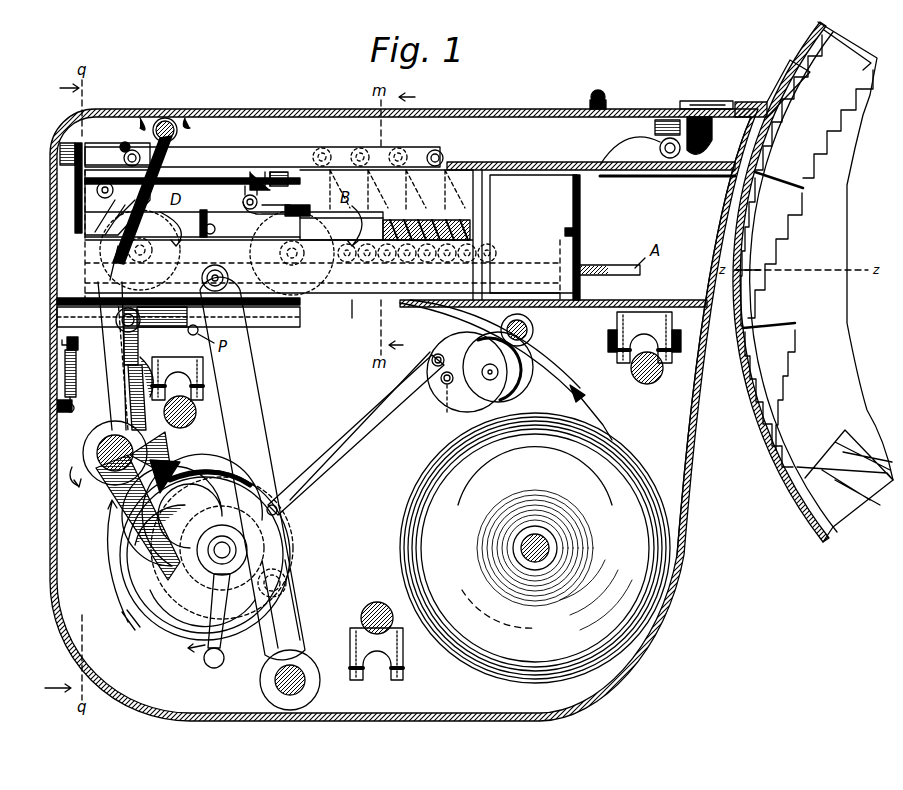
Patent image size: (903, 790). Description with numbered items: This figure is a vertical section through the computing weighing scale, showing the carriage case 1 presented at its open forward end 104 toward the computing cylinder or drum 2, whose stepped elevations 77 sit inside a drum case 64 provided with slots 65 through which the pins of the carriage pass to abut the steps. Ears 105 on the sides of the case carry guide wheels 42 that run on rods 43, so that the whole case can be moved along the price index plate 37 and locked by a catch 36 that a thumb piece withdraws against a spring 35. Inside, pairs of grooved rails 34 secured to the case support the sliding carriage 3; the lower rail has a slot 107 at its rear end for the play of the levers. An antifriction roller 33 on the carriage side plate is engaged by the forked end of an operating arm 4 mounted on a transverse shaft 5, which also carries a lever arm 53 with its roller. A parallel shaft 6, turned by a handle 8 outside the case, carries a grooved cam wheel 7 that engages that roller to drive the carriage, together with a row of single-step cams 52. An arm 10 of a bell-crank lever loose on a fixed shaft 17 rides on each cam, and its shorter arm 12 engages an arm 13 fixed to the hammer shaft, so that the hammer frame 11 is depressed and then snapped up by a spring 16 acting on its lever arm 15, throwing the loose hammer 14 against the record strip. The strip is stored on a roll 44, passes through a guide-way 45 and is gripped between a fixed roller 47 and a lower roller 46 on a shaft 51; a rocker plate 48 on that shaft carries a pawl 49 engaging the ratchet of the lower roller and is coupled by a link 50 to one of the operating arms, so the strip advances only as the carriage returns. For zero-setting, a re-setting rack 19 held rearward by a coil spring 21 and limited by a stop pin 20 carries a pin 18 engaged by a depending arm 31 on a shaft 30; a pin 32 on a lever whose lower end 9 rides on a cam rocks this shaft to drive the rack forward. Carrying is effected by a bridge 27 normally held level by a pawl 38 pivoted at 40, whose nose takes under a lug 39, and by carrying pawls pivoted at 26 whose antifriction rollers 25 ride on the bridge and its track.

The carriage case 1 is at (270, 109).
The computing cylinder or drum 2 is at (813, 282).
The carriage 3 is at (370, 318).
The operating arm 4 is at (262, 410).
The transverse shaft 5 is at (275, 682).
The shaft 6 is at (222, 550).
The grooved cam wheel 7 is at (120, 541).
The operating handle 8 is at (204, 621).
The lower end of lever arm 9 is at (128, 506).
The bell-crank lever arm 10 is at (155, 425).
The hammer frame 11 is at (162, 326).
The shorter bell-crank arm 12 is at (168, 415).
The arm 13 is at (140, 337).
The hammer 14 is at (57, 298).
The lever arm 15 is at (116, 321).
The spring 16 is at (65, 382).
The fixed shaft 17 is at (96, 456).
The pin 18 is at (85, 226).
The re-setting rack 19 is at (210, 212).
The stop pin 20 is at (216, 229).
The coil spring 21 is at (442, 220).
The antifriction roller 25 is at (443, 156).
The pivot 26 is at (132, 166).
The bridge 27 is at (192, 173).
The shaft 30 is at (168, 118).
The depending arm 31 is at (175, 168).
The pin 32 is at (100, 255).
The antifriction roller 33 is at (216, 270).
The grooved rails 34 is at (622, 172).
The spring 35 is at (591, 150).
The catch 36 is at (718, 101).
The price index plate 37 is at (746, 100).
The pawl 38 is at (318, 150).
The lug 39 is at (266, 172).
The pivot 40 is at (258, 203).
The guide wheels 42 is at (178, 360).
The rod 43 is at (186, 424).
The roll 44 is at (535, 548).
The guide-way 45 is at (548, 378).
The roller 46 is at (522, 374).
The fixed roller 47 is at (533, 330).
The rocker plate 48 is at (458, 400).
The pawl 49 is at (441, 386).
The link 50 is at (366, 413).
The shaft 51 is at (491, 378).
The cams 52 is at (194, 520).
The lever arm 53 is at (296, 602).
The drum case 64 is at (790, 487).
The slots 65 is at (760, 271).
The cartridge stack 77 is at (807, 251).
The forward end 104 is at (693, 456).
The ears 105 is at (681, 350).
The slot 107 is at (349, 320).